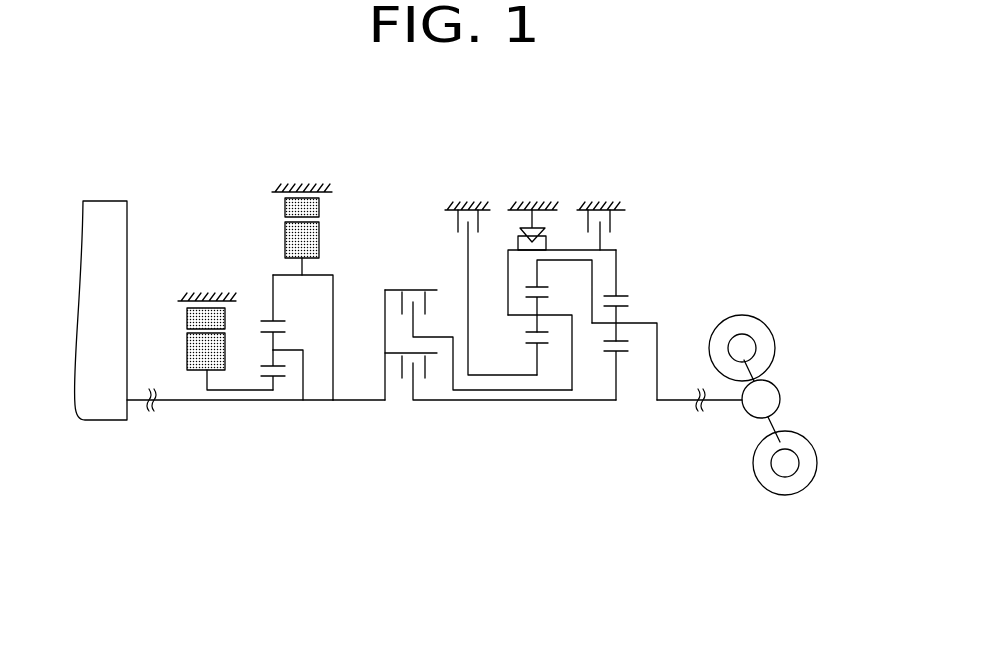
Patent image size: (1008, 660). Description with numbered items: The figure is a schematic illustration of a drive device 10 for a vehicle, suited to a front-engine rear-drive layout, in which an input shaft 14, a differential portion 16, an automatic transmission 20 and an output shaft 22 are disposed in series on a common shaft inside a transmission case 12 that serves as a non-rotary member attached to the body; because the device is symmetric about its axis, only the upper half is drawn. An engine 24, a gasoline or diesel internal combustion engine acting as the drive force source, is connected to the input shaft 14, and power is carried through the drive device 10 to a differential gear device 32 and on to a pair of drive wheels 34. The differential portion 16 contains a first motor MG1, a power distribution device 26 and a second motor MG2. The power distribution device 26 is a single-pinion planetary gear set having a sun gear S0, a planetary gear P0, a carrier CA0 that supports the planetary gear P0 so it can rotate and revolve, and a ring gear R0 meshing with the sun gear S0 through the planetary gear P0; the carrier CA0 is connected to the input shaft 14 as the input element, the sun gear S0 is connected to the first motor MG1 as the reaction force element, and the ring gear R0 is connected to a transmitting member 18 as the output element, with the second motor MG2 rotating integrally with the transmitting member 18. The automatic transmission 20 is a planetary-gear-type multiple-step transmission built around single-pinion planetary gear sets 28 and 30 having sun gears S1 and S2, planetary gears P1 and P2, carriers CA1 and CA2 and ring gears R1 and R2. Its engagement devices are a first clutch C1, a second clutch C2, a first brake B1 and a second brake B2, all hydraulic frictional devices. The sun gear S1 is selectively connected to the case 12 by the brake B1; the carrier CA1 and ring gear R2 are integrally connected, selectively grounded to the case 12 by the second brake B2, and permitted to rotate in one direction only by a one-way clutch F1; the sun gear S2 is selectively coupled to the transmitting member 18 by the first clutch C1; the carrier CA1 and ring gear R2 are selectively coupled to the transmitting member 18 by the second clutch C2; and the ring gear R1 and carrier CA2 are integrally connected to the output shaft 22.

The drive device 10 is at (183, 118).
The transmission case 12 is at (303, 190).
The input shaft 14 is at (186, 405).
The differential portion 16 is at (266, 291).
The transmitting member 18 is at (353, 403).
The automatic transmission 20 is at (535, 313).
The output shaft 22 is at (672, 404).
The engine 24 is at (104, 207).
The power distribution device 26 is at (269, 335).
The first planetary gear set 28 is at (544, 367).
The second planetary gear set 30 is at (642, 367).
The differential gear device 32 is at (757, 415).
The drive wheels 34 is at (757, 325).
The first motor MG1 is at (178, 341).
The second motor MG2 is at (280, 228).
The planetary gear P0 is at (262, 330).
The ring gear R0 is at (278, 320).
The sun gear S0 is at (262, 378).
The carrier CA0 is at (290, 352).
The first clutch C1 is at (486, 367).
The second clutch C2 is at (478, 325).
The first brake B1 is at (484, 291).
The second brake B2 is at (614, 229).
The one-way clutch F1 is at (544, 228).
The ring gear R1 is at (535, 286).
The planetary gear P1 is at (544, 295).
The carrier CA1 is at (534, 310).
The sun gear S1 is at (532, 337).
The ring gear R2 is at (622, 296).
The planetary gear P2 is at (609, 340).
The carrier CA2 is at (638, 322).
The sun gear S2 is at (635, 377).